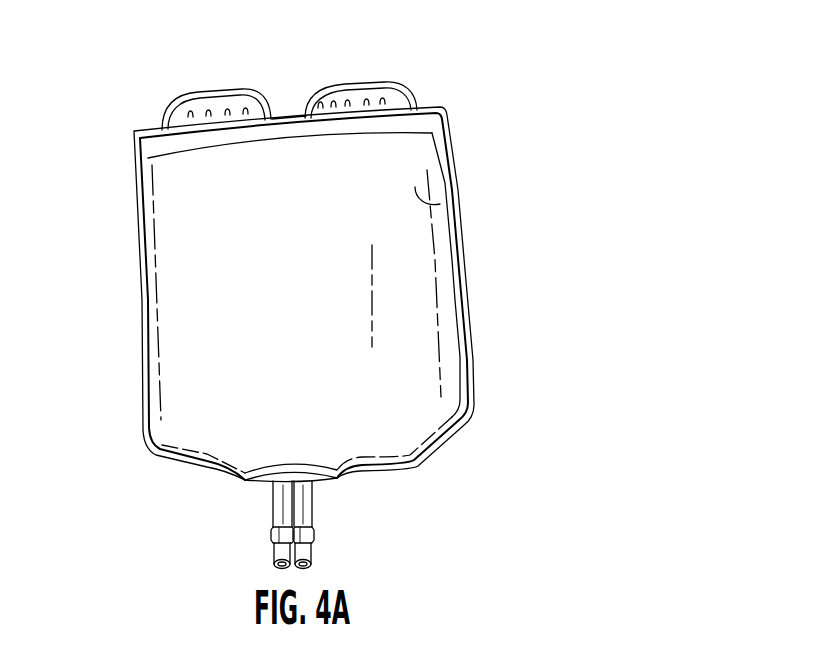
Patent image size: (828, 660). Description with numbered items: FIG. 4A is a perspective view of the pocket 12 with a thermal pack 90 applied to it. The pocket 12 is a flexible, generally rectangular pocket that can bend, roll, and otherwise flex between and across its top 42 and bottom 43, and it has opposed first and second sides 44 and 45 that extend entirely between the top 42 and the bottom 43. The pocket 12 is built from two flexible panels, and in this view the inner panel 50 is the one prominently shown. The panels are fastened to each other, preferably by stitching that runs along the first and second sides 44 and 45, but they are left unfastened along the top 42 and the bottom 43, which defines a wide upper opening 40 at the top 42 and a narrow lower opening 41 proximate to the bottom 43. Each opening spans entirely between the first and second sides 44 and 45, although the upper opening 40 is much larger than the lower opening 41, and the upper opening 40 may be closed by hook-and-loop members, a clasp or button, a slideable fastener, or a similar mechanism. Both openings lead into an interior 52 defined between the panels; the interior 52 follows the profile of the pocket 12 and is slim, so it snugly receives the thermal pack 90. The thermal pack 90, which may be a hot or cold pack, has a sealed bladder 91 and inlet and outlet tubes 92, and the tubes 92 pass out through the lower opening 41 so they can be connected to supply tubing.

The pocket 12 is at (577, 157).
The upper opening 40 is at (412, 98).
The lower opening 41 is at (318, 489).
The top 42 is at (443, 116).
The bottom 43 is at (361, 474).
The first side 44 is at (142, 372).
The second side 45 is at (476, 362).
The inner panel 50 is at (440, 204).
The interior 52 is at (283, 94).
The thermal pack 90 is at (206, 87).
The sealed bladder 91 is at (228, 98).
The inlet and outlet tubes 92 is at (280, 512).